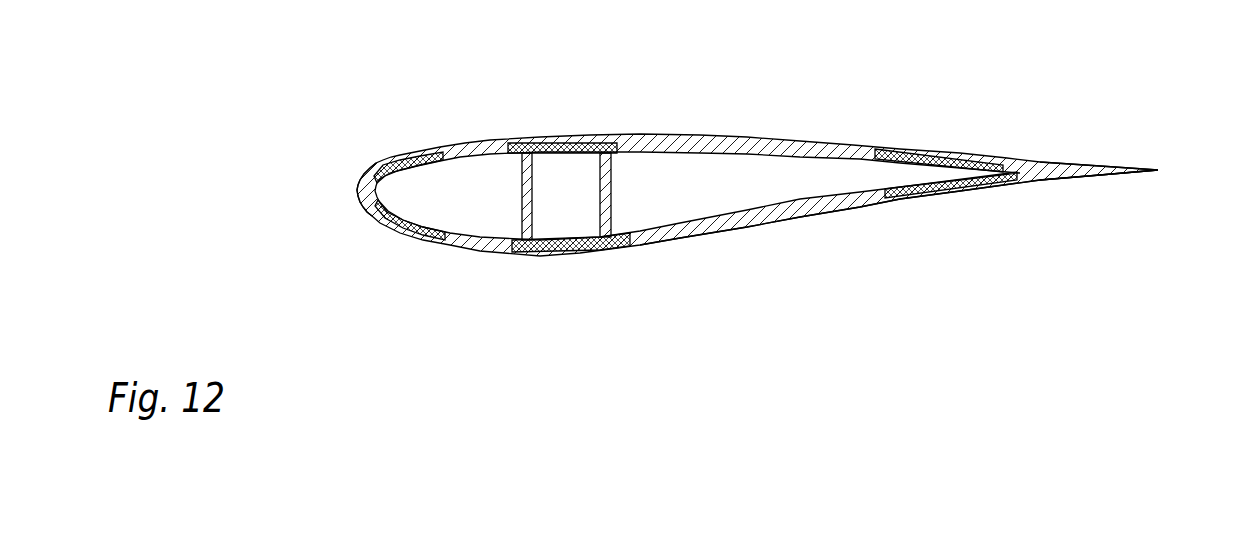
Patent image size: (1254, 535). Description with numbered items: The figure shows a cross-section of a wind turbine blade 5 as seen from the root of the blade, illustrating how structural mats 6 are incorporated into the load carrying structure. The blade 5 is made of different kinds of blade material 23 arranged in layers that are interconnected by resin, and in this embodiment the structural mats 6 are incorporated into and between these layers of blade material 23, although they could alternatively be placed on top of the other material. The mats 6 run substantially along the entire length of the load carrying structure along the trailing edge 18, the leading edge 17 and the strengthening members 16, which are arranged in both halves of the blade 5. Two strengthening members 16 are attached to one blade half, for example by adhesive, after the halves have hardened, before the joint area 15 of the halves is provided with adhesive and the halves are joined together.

The wind turbine blade 5 is at (710, 173).
The structural mats 6 is at (578, 140).
The joint area 15 is at (1072, 175).
The strengthening member 16 is at (607, 203).
The leading edge 17 is at (357, 199).
The trailing edge 18 is at (1113, 163).
The blade material 23 is at (677, 140).